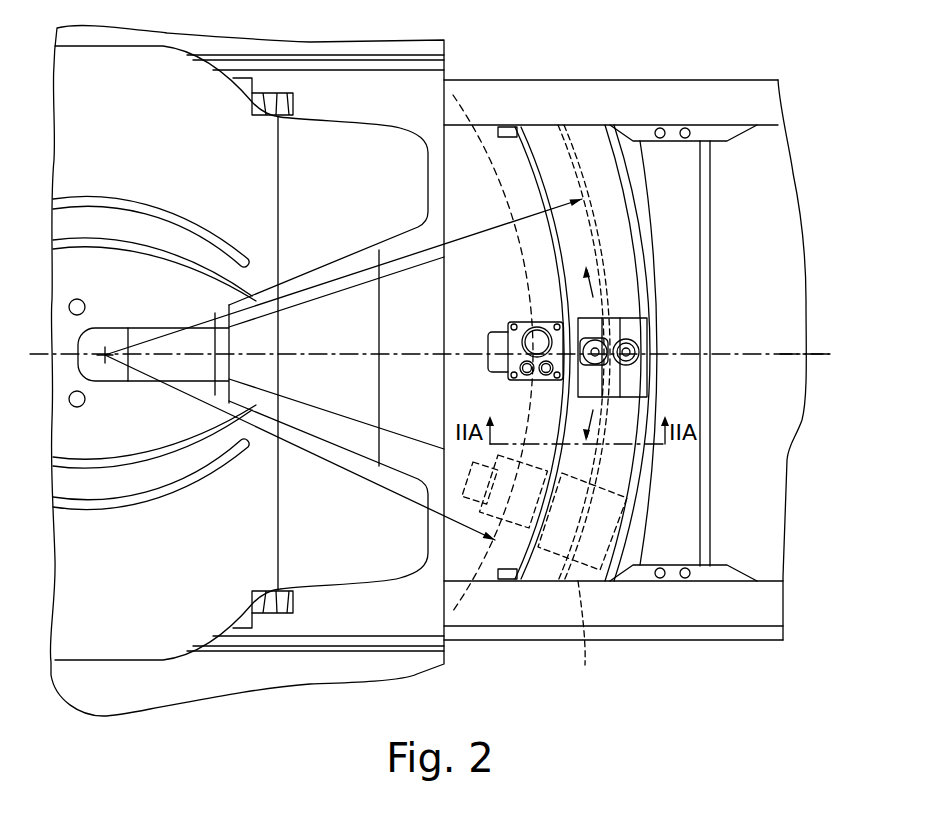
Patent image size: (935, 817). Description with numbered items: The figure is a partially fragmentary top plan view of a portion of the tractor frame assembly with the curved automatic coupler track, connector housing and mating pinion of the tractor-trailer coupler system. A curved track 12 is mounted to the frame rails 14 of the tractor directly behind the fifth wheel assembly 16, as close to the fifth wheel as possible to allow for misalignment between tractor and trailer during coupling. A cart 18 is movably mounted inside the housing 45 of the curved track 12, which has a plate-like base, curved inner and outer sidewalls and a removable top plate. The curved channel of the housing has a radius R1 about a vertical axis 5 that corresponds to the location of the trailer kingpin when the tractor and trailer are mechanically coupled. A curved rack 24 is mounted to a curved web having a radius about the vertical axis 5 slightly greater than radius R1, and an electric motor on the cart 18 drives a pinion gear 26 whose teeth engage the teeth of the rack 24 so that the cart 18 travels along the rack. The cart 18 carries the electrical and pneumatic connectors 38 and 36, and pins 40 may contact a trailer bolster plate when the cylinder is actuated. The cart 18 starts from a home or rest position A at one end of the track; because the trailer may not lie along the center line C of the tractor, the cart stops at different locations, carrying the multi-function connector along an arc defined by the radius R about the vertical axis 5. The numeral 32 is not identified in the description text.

The vertical axis 5 is at (105, 356).
The curved track 12 is at (612, 220).
The frame rails 14 is at (625, 102).
The fifth wheel assembly 16 is at (176, 636).
The cart 18 is at (633, 332).
The curved rack 24 is at (575, 147).
The pinion gear 26 is at (633, 367).
The drive unit housing 32 is at (523, 322).
The pneumatic connector 36 is at (527, 376).
The electrical connector 38 is at (540, 323).
The pins 40 is at (640, 347).
The housing 45 is at (532, 543).
The radius R is at (350, 477).
The radius of curved channel R1 is at (358, 273).
The home position A is at (587, 640).
The center line C is at (818, 343).